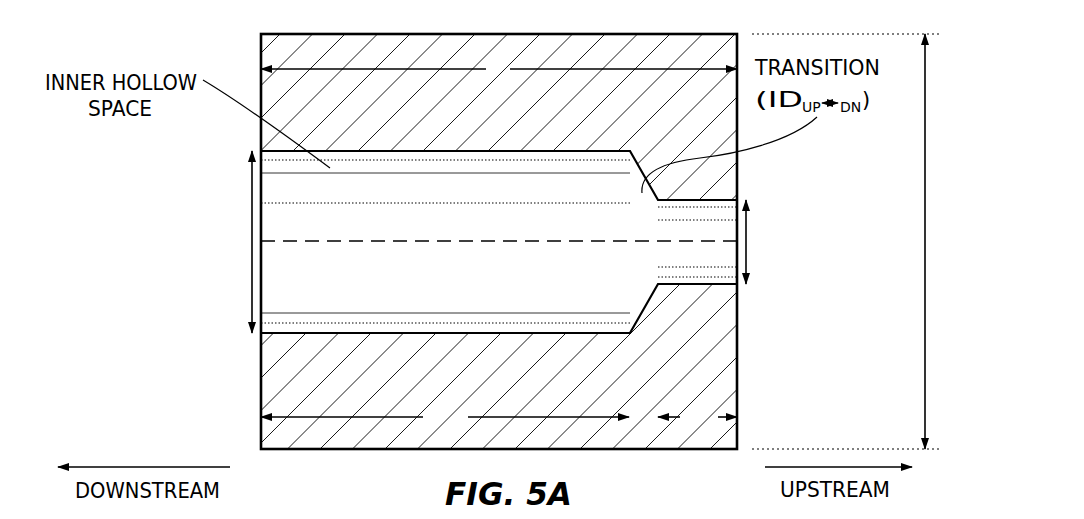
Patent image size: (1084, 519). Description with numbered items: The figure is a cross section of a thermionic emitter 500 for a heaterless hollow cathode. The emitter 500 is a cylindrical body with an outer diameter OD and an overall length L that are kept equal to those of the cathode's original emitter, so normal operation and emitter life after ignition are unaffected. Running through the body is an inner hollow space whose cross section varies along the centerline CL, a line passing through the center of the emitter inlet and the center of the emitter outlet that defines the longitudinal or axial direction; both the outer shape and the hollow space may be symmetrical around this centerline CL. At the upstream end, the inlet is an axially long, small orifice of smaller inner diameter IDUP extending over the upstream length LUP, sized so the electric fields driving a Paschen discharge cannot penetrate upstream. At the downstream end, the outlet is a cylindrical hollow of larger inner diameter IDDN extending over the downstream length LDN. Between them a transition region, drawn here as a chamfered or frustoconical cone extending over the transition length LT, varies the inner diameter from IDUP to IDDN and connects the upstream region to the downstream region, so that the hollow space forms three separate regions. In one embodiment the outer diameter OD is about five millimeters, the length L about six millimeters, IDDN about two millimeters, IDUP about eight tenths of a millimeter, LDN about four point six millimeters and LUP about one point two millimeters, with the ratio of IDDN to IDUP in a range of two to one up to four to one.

The thermionic emitter 500 is at (97, 44).
The centerline CL is at (499, 243).
The overall length L is at (499, 71).
The downstream region length LDN is at (445, 420).
The transition region length LT is at (648, 420).
The upstream region length LUP is at (697, 420).
The larger inner diameter IDDN is at (224, 242).
The smaller inner diameter IDUP is at (771, 242).
The outer diameter OD is at (860, 241).